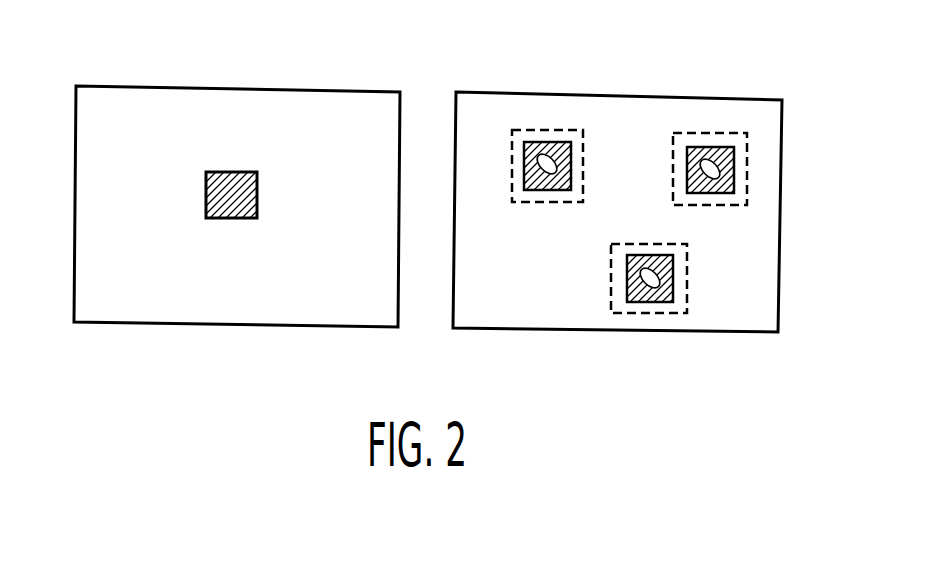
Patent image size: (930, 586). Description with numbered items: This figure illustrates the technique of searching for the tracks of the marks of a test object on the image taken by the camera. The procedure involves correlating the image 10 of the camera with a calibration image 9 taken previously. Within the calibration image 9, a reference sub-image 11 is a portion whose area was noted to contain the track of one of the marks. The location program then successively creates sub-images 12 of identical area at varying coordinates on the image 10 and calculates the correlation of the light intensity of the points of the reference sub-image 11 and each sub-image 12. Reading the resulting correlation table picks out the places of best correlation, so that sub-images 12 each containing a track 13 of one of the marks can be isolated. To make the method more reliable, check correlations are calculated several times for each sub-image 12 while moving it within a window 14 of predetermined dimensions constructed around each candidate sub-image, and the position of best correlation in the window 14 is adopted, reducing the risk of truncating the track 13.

The calibration image 9 is at (138, 340).
The image of the camera 10 is at (784, 294).
The reference sub-image 11 is at (206, 203).
The sub-image 12 is at (690, 172).
The track 13 is at (557, 145).
The window 14 is at (725, 131).